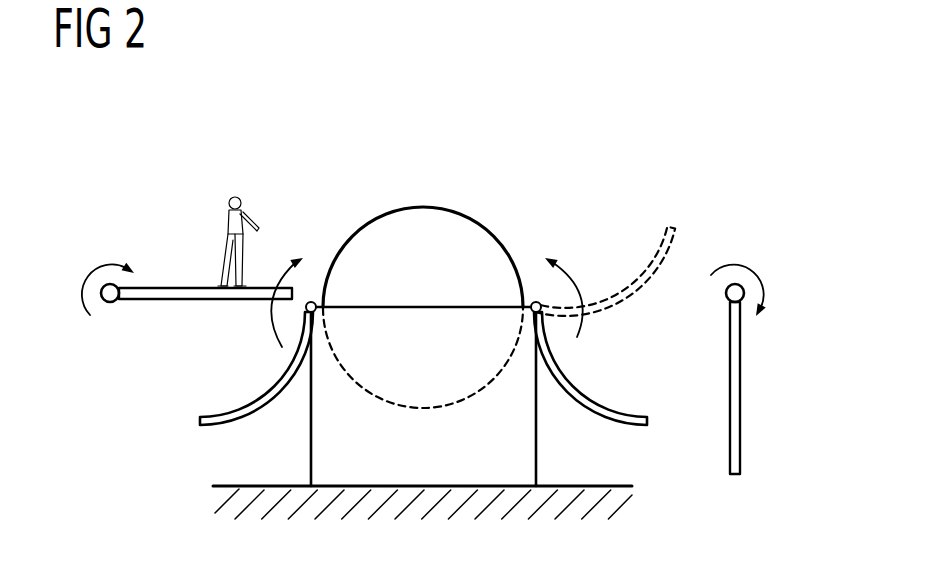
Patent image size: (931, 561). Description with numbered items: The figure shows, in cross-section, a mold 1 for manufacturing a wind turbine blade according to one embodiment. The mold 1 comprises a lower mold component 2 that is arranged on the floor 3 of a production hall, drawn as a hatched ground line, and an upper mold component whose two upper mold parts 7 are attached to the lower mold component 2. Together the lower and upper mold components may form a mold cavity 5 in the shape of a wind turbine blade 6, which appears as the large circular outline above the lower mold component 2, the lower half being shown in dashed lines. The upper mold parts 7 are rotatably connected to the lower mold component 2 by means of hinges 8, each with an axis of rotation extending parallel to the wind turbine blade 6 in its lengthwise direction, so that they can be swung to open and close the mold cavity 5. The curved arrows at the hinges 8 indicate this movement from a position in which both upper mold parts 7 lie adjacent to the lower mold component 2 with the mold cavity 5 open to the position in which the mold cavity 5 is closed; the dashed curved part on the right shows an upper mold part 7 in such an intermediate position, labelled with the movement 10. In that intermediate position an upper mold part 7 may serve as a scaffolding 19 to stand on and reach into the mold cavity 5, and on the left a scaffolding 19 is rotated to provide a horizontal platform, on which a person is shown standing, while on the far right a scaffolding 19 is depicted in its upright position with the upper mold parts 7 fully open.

The mold 1 is at (552, 112).
The lower mold component 2 is at (537, 453).
The floor 3 is at (274, 497).
The mold cavity 5 is at (372, 392).
The wind turbine blade 6 is at (423, 207).
The upper mold parts 7 is at (232, 404).
The hinges 8 is at (311, 300).
The pivoting direction 10 is at (593, 235).
The scaffolding 19 is at (178, 288).